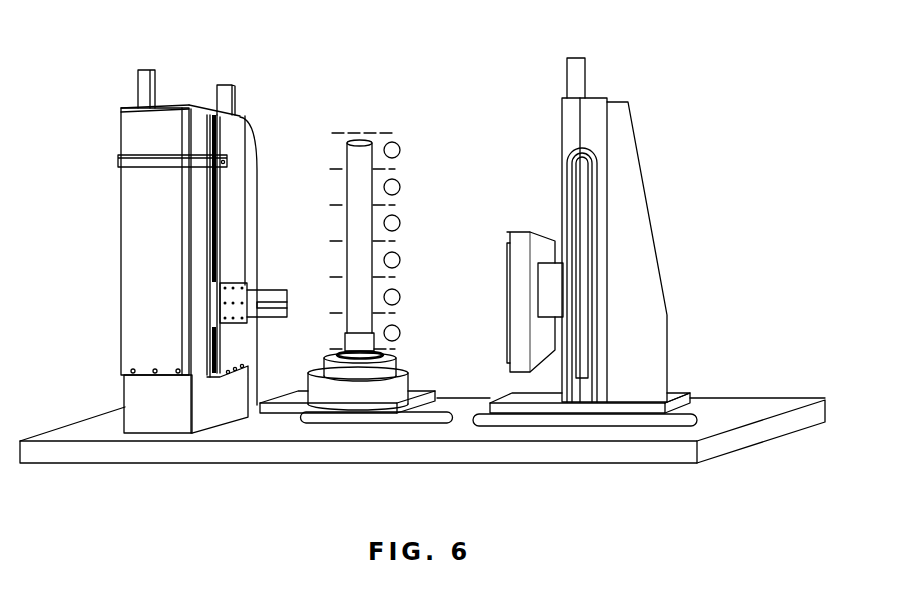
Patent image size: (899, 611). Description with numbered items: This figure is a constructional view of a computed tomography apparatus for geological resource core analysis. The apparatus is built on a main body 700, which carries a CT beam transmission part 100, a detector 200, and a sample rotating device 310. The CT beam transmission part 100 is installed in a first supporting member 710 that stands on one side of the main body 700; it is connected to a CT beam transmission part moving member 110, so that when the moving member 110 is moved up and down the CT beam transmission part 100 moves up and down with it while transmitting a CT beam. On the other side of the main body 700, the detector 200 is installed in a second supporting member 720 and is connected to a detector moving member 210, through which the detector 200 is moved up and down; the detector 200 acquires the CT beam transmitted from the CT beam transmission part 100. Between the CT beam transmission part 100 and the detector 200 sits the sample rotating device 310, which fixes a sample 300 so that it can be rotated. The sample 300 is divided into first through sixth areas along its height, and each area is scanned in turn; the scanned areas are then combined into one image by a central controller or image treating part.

The CT beam transmission part 100 is at (258, 285).
The CT beam transmission part moving member 110 is at (258, 153).
The detector 200 is at (510, 300).
The detector moving member 210 is at (602, 274).
The sample 300 is at (362, 141).
The sample rotating device 310 is at (343, 340).
The main body 700 is at (742, 408).
The first supporting member 710 is at (165, 123).
The second supporting member 720 is at (623, 137).